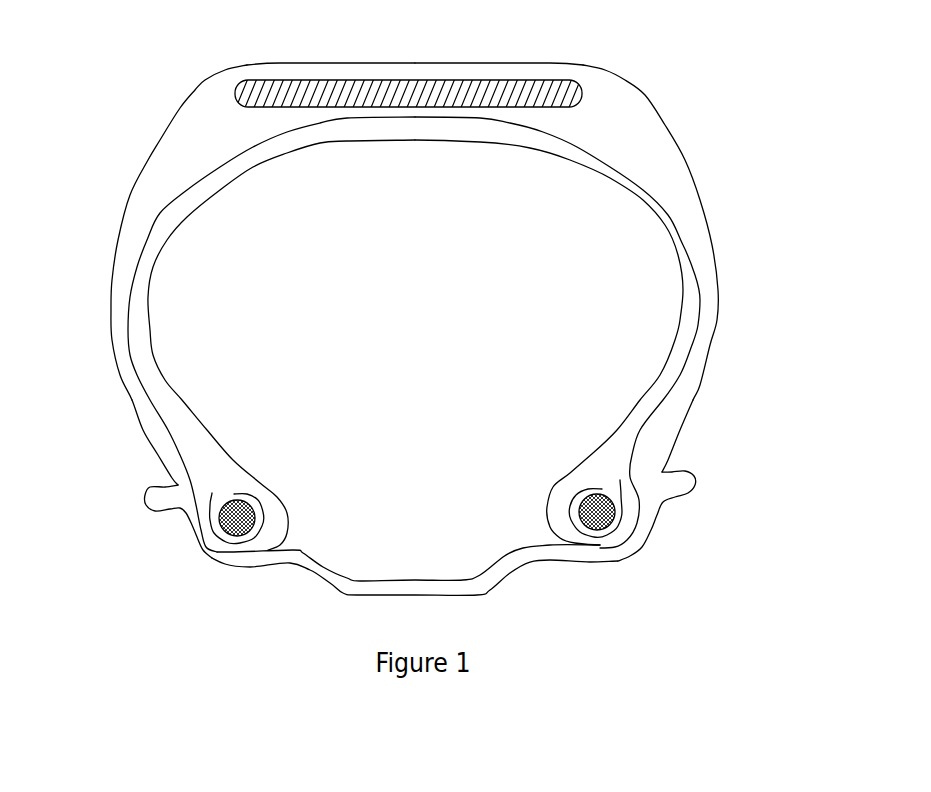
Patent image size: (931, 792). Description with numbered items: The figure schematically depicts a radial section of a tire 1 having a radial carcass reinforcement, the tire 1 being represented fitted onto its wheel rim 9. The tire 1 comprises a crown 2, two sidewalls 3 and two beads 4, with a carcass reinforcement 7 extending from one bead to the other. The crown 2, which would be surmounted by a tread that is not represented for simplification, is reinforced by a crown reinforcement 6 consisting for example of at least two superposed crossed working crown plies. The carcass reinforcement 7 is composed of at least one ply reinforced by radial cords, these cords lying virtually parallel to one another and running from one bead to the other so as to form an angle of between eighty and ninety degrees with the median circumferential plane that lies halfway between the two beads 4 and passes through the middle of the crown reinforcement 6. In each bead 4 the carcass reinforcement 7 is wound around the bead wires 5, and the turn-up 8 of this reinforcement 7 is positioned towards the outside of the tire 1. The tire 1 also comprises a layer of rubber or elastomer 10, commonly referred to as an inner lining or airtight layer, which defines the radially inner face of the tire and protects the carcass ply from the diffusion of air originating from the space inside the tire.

The tire 1 is at (732, 230).
The crown 2 is at (503, 72).
The sidewalls 3 is at (118, 303).
The beads 4 is at (268, 541).
The bead wires 5 is at (266, 513).
The crown reinforcement 6 is at (407, 80).
The carcass reinforcement 7 is at (148, 213).
The turn-up 8 is at (175, 461).
The wheel rim 9 is at (198, 524).
The layer of rubber or elastomer 10 is at (153, 345).